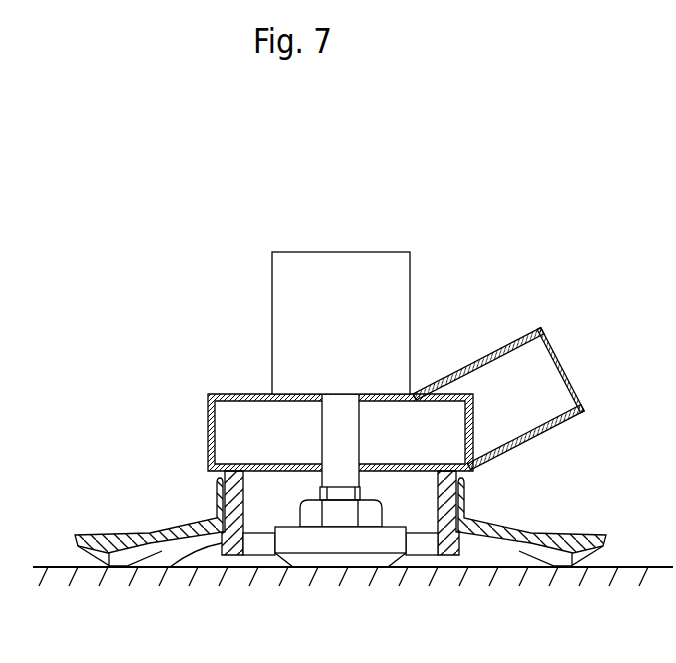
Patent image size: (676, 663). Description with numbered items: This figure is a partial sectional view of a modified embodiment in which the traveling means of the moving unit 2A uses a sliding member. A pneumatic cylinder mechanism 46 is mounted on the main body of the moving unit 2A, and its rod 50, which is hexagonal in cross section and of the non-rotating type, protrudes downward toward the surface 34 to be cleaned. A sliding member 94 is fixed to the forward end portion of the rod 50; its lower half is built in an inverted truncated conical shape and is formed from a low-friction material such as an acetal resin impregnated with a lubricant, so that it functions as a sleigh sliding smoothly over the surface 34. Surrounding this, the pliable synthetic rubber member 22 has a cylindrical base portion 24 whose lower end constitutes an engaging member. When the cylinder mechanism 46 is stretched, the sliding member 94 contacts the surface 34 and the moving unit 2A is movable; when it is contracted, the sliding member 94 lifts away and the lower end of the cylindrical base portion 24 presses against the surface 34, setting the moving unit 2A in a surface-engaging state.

The moving unit 2A is at (207, 364).
The pneumatic cylinder mechanism 46 is at (364, 249).
The rod 50 is at (360, 431).
The member 22 is at (199, 514).
The cylindrical base portion 24 is at (187, 565).
The sliding member 94 is at (280, 563).
The surface to be cleaned 34 is at (630, 568).